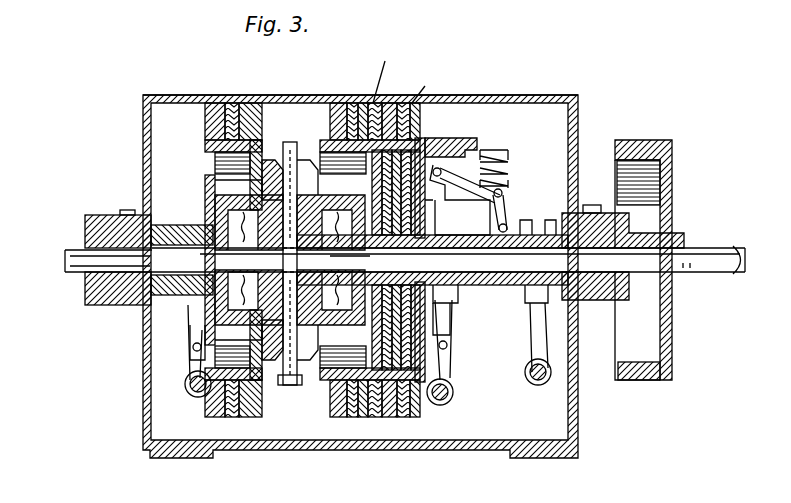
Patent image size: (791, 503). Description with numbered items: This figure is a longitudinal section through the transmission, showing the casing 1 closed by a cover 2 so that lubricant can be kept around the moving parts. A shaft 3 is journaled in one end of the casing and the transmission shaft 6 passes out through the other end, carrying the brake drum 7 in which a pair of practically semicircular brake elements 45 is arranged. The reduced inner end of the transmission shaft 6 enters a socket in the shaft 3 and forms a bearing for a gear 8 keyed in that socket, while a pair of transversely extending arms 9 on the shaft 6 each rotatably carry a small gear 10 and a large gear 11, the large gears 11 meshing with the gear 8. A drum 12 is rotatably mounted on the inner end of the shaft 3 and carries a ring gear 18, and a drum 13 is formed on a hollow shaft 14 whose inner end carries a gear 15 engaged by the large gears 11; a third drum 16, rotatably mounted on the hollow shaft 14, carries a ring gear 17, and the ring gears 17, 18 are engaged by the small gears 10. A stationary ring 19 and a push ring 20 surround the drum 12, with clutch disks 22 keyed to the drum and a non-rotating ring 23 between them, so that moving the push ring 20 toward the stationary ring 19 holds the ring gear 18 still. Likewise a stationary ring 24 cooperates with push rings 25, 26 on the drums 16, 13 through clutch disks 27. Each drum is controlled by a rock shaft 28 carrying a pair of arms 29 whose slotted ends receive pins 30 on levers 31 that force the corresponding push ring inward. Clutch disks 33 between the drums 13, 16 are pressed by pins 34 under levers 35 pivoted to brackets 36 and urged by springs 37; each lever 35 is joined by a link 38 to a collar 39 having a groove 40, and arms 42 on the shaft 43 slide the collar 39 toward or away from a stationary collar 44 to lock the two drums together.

The casing 1 is at (578, 406).
The cover 2 is at (507, 95).
The shaft 3 is at (72, 260).
The transmission shaft 6 is at (727, 246).
The brake drum 7 is at (652, 140).
The gear 8 is at (220, 213).
The transversely extending arms 9 is at (288, 180).
The small gear 10 is at (305, 170).
The large gear 11 is at (228, 190).
The drum 12 is at (215, 158).
The drum 13 is at (426, 150).
The hollow shaft 14 is at (498, 285).
The gear 15 is at (350, 275).
The third drum 16 is at (396, 260).
The ring gear 17 is at (324, 103).
The ring gear 18 is at (262, 165).
The stationary ring 19 is at (262, 106).
The push ring 20 is at (216, 103).
The clutch disks 22 is at (236, 103).
The ring 23 is at (233, 103).
The stationary ring 24 is at (385, 71).
The push ring 25 is at (345, 103).
The push ring 26 is at (425, 83).
The clutch disks 27 is at (362, 103).
The rock shaft 28 is at (186, 388).
The arms 29 is at (188, 372).
The pins 30 is at (190, 348).
The levers 31 is at (192, 306).
The clutch disks 33 is at (440, 302).
The pins 34 is at (440, 196).
The levers 35 is at (508, 170).
The brackets 36 is at (462, 142).
The springs 37 is at (505, 152).
The link 38 is at (503, 214).
The collar 39 is at (520, 272).
The groove 40 is at (540, 220).
The arms 42 is at (527, 352).
The shaft 43 is at (537, 385).
The stationary collar 44 is at (575, 214).
The brake elements 45 is at (660, 368).